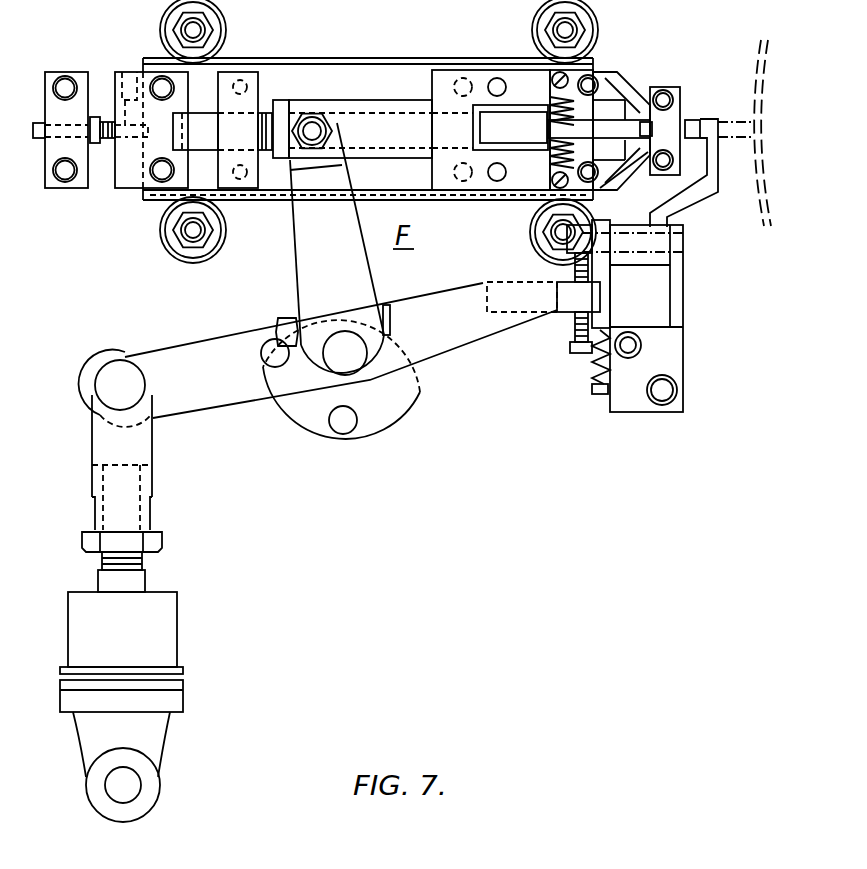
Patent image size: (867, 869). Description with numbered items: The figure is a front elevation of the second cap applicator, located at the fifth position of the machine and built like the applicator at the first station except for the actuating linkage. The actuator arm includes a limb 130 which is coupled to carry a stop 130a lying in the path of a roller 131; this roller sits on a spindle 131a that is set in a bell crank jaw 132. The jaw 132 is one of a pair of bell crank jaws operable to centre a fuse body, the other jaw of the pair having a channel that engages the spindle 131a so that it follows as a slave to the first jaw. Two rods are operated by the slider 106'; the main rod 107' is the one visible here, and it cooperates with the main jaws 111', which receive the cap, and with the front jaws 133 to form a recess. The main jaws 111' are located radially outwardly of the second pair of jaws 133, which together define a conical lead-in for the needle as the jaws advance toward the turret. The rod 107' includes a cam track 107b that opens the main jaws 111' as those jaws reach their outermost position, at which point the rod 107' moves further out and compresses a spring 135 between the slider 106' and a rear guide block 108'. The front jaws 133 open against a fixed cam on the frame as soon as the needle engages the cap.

The rear guide block 108' is at (259, 104).
The slider 106' is at (360, 87).
The main rod 107' is at (491, 105).
The cam track 107b is at (602, 102).
The main jaws 111' is at (652, 109).
The spring 135 is at (275, 108).
The front jaws 133 is at (637, 186).
The bell crank jaw 132 is at (688, 195).
The roller 131 is at (563, 233).
The stop 130a is at (573, 278).
The limb 130 is at (477, 323).
The spindle 131a is at (672, 258).